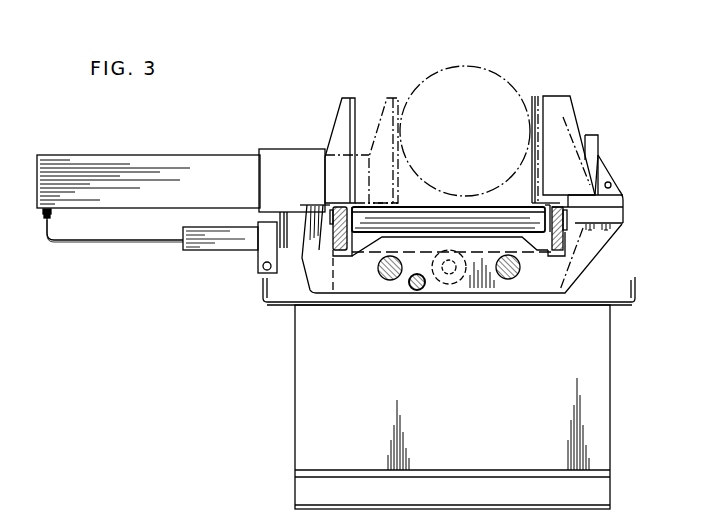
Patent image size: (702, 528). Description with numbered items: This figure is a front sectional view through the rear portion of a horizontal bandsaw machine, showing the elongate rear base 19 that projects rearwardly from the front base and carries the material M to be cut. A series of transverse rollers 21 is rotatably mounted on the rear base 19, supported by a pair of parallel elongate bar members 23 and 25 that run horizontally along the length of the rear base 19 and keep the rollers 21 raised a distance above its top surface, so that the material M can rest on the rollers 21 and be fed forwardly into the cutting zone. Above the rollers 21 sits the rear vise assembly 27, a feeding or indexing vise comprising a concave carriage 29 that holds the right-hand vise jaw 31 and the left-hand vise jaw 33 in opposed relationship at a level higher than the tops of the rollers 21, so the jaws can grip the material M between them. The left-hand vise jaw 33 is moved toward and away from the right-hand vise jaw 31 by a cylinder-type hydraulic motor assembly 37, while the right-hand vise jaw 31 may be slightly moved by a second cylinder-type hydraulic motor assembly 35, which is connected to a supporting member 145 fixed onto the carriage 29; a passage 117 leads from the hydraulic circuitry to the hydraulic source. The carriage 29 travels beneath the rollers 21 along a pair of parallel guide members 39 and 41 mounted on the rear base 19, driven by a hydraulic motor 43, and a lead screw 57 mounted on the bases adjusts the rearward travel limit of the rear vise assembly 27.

The rear base 19 is at (305, 412).
The transverse rollers 21 is at (500, 198).
The elongate bar member 23 is at (556, 238).
The elongate bar member 25 is at (337, 243).
The rear vise assembly 27 is at (325, 122).
The carriage 29 is at (537, 284).
The right-hand vise jaw 31 is at (555, 117).
The left-hand vise jaw 33 is at (345, 125).
The hydraulic motor assembly 35 is at (590, 130).
The hydraulic motor assembly 37 is at (224, 149).
The guide member 39 is at (505, 279).
The guide member 41 is at (386, 281).
The hydraulic motor 43 is at (445, 285).
The lead screw 57 is at (415, 291).
The passage 117 is at (88, 241).
The supporting member 145 is at (615, 198).
The material M is at (447, 63).